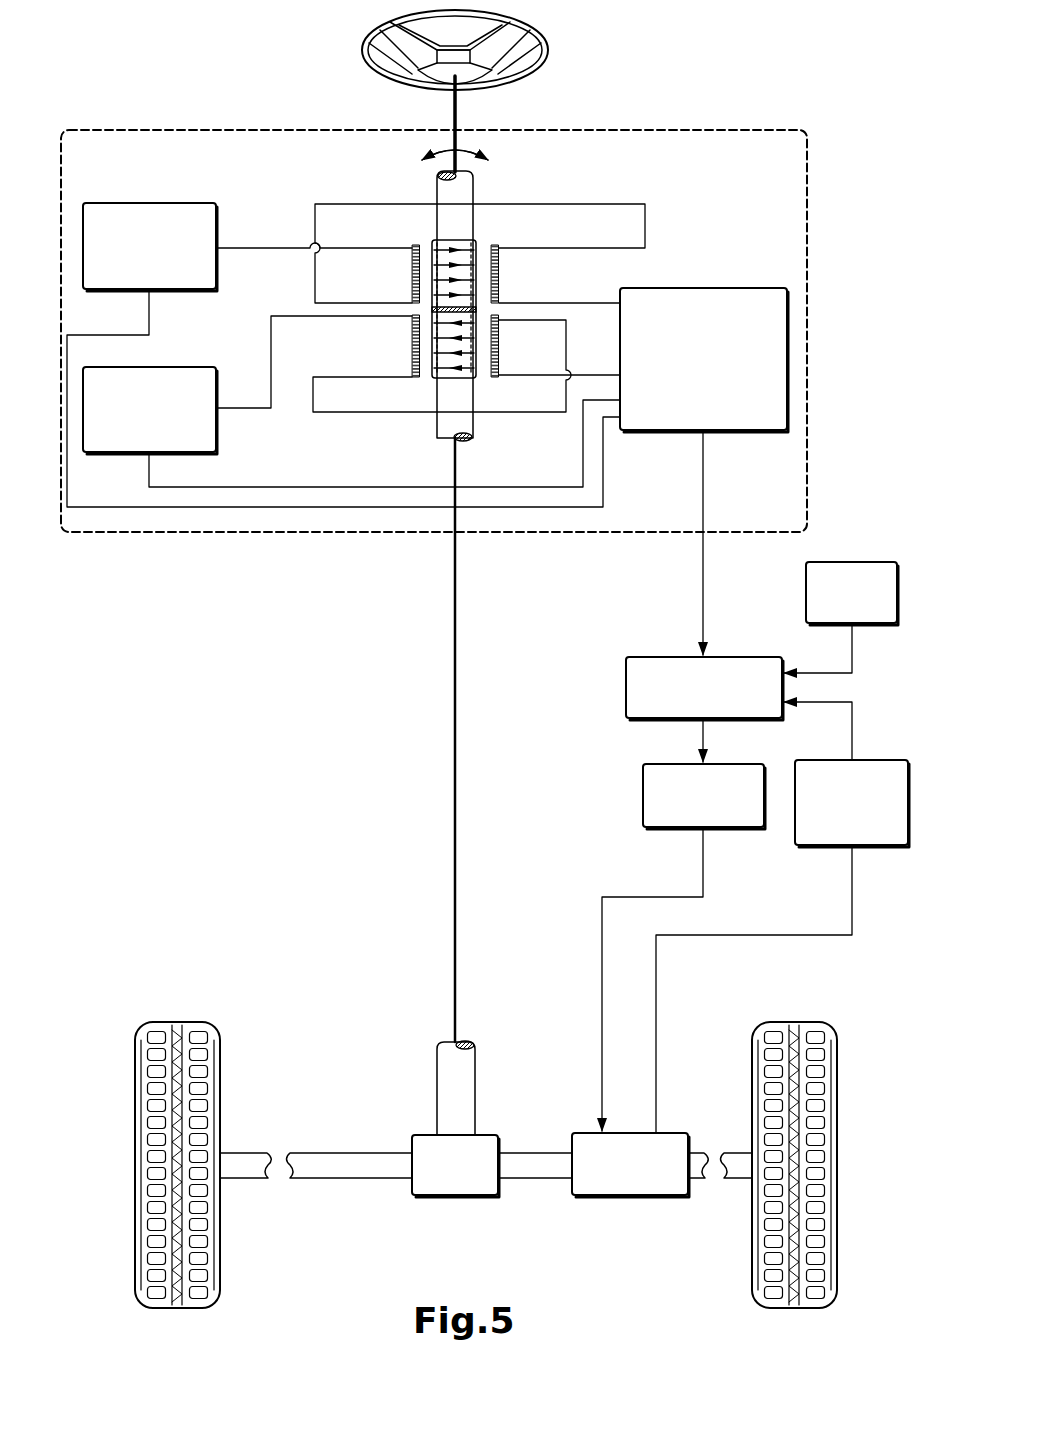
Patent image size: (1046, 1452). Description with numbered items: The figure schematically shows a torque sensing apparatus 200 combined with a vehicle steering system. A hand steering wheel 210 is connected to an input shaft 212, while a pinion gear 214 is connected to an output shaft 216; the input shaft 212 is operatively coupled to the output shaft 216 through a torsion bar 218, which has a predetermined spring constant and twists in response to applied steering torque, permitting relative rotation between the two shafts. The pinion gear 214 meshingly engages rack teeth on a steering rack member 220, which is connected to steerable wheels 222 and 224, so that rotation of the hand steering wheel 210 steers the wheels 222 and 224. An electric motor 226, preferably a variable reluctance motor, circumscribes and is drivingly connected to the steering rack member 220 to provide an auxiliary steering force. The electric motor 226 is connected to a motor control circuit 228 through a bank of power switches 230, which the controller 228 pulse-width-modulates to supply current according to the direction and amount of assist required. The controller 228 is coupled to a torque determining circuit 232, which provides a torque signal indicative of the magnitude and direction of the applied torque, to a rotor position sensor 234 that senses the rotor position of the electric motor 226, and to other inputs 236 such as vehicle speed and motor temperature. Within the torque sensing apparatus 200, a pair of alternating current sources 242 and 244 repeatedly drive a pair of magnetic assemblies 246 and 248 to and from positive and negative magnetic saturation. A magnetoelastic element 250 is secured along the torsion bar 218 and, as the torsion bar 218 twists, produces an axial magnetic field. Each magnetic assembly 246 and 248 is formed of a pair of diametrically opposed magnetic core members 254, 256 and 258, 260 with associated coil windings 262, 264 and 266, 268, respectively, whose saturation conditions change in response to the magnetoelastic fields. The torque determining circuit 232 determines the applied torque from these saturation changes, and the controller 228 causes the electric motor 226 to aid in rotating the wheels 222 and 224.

The torque sensing apparatus 200 is at (812, 210).
The hand steering wheel 210 is at (533, 25).
The input shaft 212 is at (458, 105).
The pinion gear 214 is at (450, 1195).
The output shaft 216 is at (455, 880).
The torsion bar 218 is at (465, 188).
The steering rack member 220 is at (380, 1178).
The steerable wheel 222 is at (220, 1295).
The steerable wheel 224 is at (838, 1255).
The electric motor 226 is at (618, 1195).
The motor control circuit 228 is at (626, 703).
The power switches 230 is at (643, 805).
The torque determining circuit 232 is at (787, 383).
The rotor position sensor 234 is at (830, 845).
The other inputs 236 is at (806, 605).
The alternating current source 242 is at (128, 203).
The alternating current source 244 is at (150, 367).
The magnetic assembly 246 is at (480, 253).
The magnetic assembly 248 is at (404, 353).
The magnetoelastic element 250 is at (430, 310).
The magnetic core member 254 is at (380, 257).
The magnetic core member 256 is at (550, 260).
The magnetic core member 258 is at (412, 380).
The magnetic core member 260 is at (555, 344).
The coil winding 262 is at (412, 262).
The coil winding 264 is at (499, 275).
The coil winding 266 is at (378, 362).
The coil winding 268 is at (499, 335).